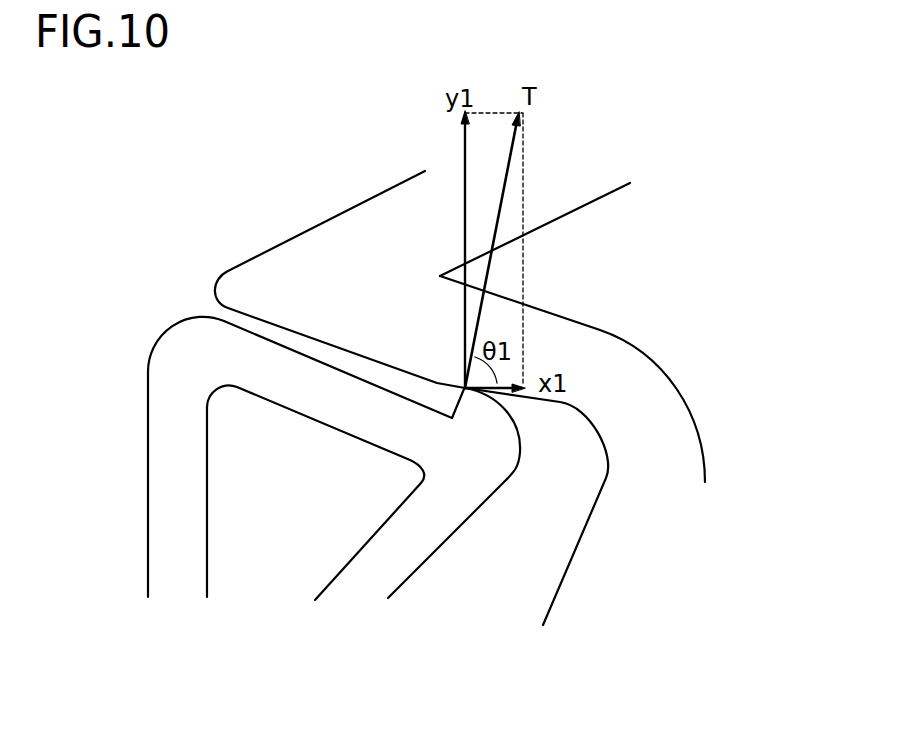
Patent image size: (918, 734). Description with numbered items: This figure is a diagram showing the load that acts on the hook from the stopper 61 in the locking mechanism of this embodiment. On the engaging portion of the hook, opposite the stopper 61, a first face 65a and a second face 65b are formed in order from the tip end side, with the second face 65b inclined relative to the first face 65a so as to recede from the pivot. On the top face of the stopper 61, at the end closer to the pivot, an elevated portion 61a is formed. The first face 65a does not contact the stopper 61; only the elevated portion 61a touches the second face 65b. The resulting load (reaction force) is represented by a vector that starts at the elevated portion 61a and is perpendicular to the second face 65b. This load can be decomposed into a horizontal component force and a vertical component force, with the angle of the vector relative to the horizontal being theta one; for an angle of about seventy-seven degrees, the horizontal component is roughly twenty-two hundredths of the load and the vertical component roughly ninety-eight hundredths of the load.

The stopper 61 is at (148, 522).
The elevated portion 61a is at (470, 394).
The first face 65a is at (343, 347).
The second face 65b is at (528, 398).